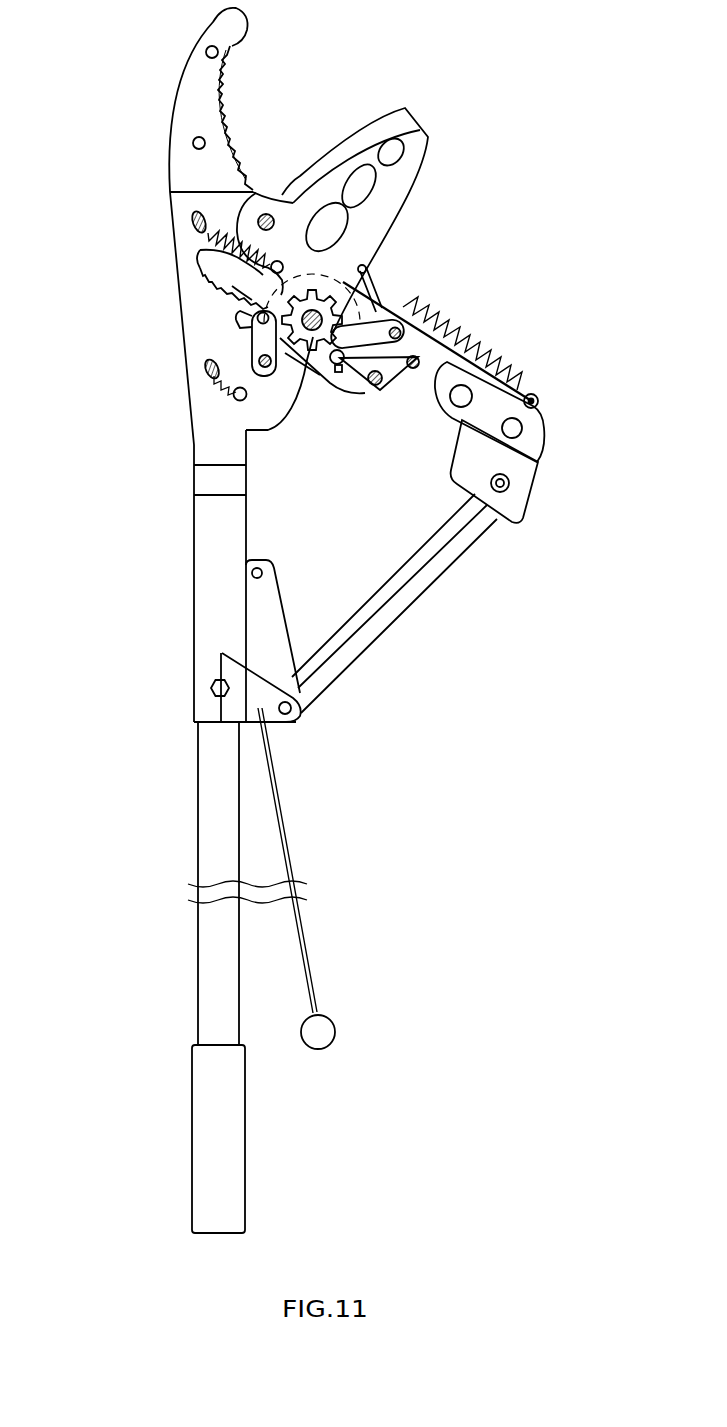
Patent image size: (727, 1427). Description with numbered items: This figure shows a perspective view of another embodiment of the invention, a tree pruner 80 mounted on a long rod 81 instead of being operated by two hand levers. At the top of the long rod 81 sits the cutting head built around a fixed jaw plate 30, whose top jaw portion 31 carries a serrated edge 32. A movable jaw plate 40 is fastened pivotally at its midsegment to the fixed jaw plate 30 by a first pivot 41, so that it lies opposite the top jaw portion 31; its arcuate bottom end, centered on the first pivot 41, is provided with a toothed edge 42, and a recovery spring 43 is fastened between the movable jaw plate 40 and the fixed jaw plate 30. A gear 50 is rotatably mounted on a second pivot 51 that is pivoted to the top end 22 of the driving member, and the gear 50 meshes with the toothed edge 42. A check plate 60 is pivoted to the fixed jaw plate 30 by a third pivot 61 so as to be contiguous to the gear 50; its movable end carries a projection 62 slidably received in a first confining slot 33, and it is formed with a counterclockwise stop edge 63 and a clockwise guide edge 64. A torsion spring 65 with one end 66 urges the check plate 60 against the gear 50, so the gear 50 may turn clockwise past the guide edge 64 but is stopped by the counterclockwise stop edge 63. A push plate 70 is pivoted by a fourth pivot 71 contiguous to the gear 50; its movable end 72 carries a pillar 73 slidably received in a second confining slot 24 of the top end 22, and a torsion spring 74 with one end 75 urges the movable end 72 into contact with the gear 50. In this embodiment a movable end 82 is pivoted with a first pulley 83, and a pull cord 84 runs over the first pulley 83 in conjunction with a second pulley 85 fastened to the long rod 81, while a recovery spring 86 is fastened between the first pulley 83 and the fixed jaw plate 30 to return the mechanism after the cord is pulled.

The top end of the second handle 22 is at (379, 302).
The second confining slot 24 is at (365, 393).
The fixed jaw plate 30 is at (122, 246).
The top jaw portion 31 is at (172, 117).
The serrated edge 32 is at (223, 72).
The first confining slot 33 is at (250, 330).
The movable jaw plate 40 is at (408, 192).
The first pivot 41 is at (265, 212).
The toothed edge 42 is at (208, 282).
The recovery spring 43 is at (193, 232).
The gear 50 is at (294, 363).
The second pivot 51 is at (337, 365).
The check plate 60 is at (252, 346).
The third pivot 61 is at (266, 376).
The projection 62 is at (245, 314).
The counterclockwise stop edge 63 is at (235, 287).
The clockwise guide edge 64 is at (276, 365).
The torsion spring 65 is at (236, 397).
The end of the torsion spring 66 is at (210, 383).
The push plate 70 is at (410, 297).
The fourth pivot 71 is at (426, 322).
The movable end of the push plate 72 is at (372, 300).
The pillar 73 is at (330, 356).
The torsion spring 74 is at (412, 372).
The end of the torsion spring 75 is at (445, 343).
The tree pruner 80 is at (405, 675).
The long rod 81 is at (190, 570).
The movable end 82 is at (465, 344).
The first pulley 83 is at (548, 450).
The pull cord 84 is at (397, 615).
The second pulley 85 is at (308, 724).
The recovery spring 86 is at (498, 365).